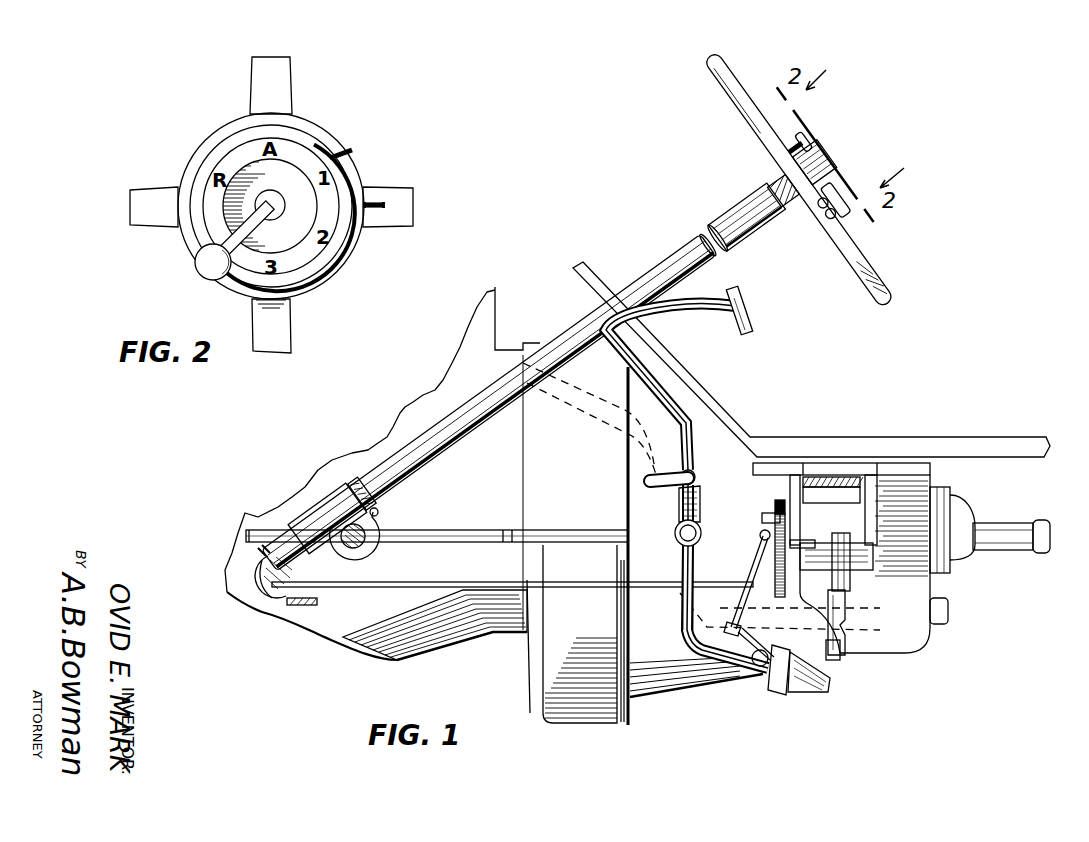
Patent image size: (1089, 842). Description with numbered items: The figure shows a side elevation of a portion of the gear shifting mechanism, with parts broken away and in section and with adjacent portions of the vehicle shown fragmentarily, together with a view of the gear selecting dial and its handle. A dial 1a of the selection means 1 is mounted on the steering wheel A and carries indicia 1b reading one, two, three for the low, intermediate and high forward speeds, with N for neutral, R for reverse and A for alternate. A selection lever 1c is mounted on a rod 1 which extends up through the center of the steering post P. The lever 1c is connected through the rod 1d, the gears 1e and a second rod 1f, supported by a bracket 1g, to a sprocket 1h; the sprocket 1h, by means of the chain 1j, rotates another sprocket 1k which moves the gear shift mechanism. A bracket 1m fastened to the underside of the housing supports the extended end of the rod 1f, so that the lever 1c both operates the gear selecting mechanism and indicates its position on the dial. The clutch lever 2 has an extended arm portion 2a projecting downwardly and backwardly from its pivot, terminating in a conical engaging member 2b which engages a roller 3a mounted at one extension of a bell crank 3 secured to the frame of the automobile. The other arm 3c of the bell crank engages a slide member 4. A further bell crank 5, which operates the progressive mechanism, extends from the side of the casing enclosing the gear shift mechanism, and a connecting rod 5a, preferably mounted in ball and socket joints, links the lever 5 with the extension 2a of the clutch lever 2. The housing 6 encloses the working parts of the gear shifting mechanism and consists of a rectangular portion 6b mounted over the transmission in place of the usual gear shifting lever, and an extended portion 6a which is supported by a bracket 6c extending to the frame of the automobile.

In FIG. 2, the steering wheel A is at (380, 197).
In FIG. 1, the steering wheel A is at (745, 101).
In FIG. 1, the steering post P is at (657, 270).
In FIG. 2, the selection means 1 is at (297, 262).
In FIG. 1, the selection means 1 is at (807, 173).
In FIG. 2, the dial 1a is at (285, 150).
In FIG. 1, the dial 1a is at (793, 150).
In FIG. 2, the indicia 1b is at (325, 160).
In FIG. 2, the selection lever 1c is at (230, 280).
In FIG. 1, the selection lever 1c is at (807, 140).
In FIG. 1, the rod 1d is at (272, 556).
In FIG. 1, the gears 1e is at (270, 586).
In FIG. 1, the second rod 1f is at (373, 582).
In FIG. 1, the bracket 1g is at (302, 606).
In FIG. 1, the sprocket 1h is at (773, 567).
In FIG. 1, the chain 1j is at (760, 540).
In FIG. 1, the sprocket 1k is at (772, 507).
In FIG. 1, the bracket 1m is at (830, 660).
In FIG. 1, the clutch lever 2 is at (688, 415).
In FIG. 1, the extended arm portion 2a is at (735, 662).
In FIG. 1, the conical engaging member 2b is at (798, 692).
In FIG. 1, the bell crank 3 is at (915, 652).
In FIG. 1, the roller 3a is at (860, 655).
In FIG. 1, the arm of bell crank 3c is at (850, 585).
In FIG. 1, the slide member 4 is at (845, 540).
In FIG. 1, the bell crank 5 is at (808, 510).
In FIG. 1, the connecting rod 5a is at (700, 625).
In FIG. 1, the housing 6 is at (792, 470).
In FIG. 1, the extended portion 6a is at (832, 500).
In FIG. 1, the rectangular portion 6b is at (905, 475).
In FIG. 1, the bracket 6c is at (845, 480).